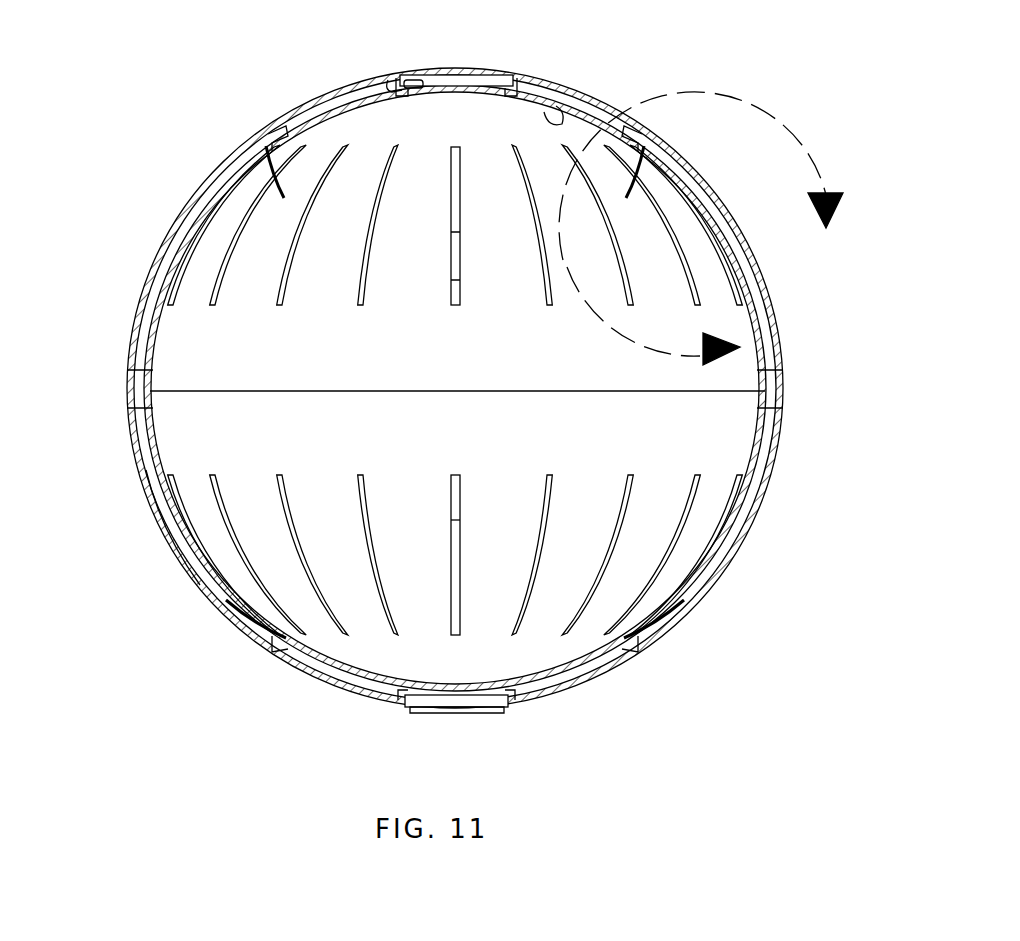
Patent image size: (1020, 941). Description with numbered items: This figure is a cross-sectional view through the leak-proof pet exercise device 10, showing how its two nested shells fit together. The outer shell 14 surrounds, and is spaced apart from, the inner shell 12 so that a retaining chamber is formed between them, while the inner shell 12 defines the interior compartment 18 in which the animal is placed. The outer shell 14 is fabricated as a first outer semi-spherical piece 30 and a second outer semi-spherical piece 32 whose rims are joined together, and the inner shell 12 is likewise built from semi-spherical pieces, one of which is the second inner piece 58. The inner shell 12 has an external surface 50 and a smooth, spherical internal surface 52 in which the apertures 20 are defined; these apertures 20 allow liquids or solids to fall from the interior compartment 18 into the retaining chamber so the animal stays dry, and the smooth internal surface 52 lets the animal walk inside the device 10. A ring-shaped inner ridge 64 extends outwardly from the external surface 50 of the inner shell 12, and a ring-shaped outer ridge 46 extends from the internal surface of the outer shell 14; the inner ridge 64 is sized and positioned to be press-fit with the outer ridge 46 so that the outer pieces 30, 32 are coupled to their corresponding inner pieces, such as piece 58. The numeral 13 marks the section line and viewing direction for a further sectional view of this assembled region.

The exercise device 10 is at (424, 364).
The inner shell 12 is at (310, 113).
The outer shell 14 is at (337, 85).
The first outer semi-spherical piece 30 is at (264, 132).
The external surface 50 is at (376, 92).
The outer ridge 46 is at (390, 88).
The inner ridge 64 is at (422, 88).
The internal surface 52 is at (556, 120).
The second inner semi-spherical piece 58 is at (176, 422).
The second outer semi-spherical piece 32 is at (150, 504).
The apertures 20 is at (458, 228).
The interior compartment 18 is at (732, 452).
The section view indicator 13 is at (701, 228).